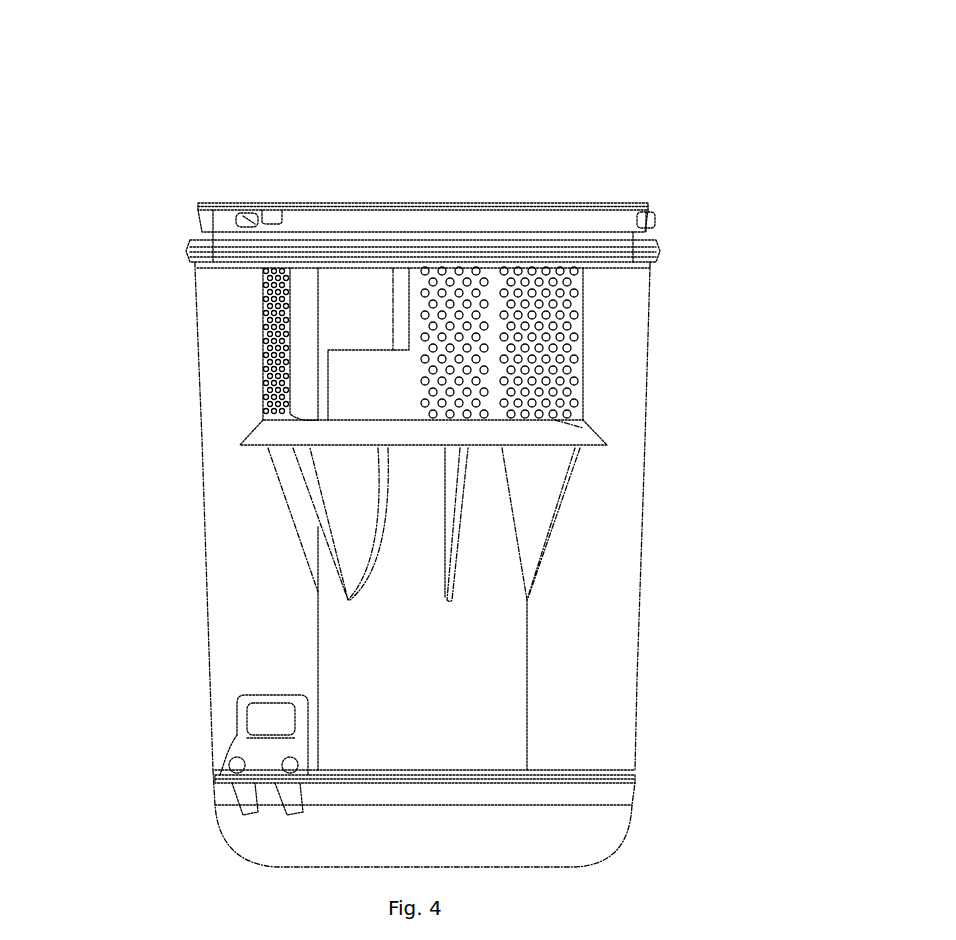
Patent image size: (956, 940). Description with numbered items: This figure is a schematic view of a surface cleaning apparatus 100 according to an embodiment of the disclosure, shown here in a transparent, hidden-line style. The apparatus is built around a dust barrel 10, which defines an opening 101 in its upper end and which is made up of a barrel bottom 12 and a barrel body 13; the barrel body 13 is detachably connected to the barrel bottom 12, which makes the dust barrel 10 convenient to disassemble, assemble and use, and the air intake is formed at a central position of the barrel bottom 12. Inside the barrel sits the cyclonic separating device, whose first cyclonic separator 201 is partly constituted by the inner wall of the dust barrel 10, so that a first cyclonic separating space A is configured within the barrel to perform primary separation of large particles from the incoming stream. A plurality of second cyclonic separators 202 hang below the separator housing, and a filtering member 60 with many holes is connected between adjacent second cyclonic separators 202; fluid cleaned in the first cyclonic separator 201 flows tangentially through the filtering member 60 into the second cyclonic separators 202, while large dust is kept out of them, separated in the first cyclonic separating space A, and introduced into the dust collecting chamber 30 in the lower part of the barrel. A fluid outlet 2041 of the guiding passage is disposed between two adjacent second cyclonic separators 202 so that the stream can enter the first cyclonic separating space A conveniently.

The surface cleaning apparatus 100 is at (369, 92).
The opening 101 is at (457, 200).
The filtering member 60 is at (553, 323).
The fluid outlet 2041 is at (347, 335).
The first cyclonic separator 201 is at (582, 398).
The second cyclonic separators 202 is at (333, 480).
The first cyclonic separating space A is at (613, 488).
The dust collecting chamber 30 is at (578, 725).
The dust barrel 10 is at (130, 700).
The barrel body 13 is at (215, 762).
The barrel bottom 12 is at (230, 825).